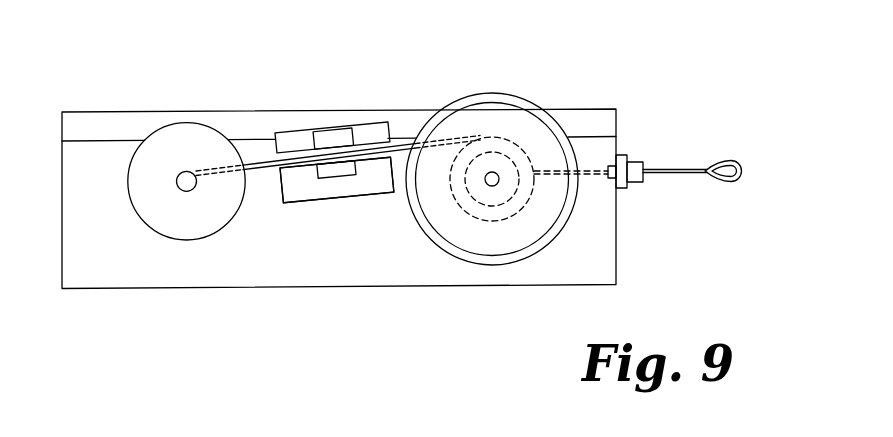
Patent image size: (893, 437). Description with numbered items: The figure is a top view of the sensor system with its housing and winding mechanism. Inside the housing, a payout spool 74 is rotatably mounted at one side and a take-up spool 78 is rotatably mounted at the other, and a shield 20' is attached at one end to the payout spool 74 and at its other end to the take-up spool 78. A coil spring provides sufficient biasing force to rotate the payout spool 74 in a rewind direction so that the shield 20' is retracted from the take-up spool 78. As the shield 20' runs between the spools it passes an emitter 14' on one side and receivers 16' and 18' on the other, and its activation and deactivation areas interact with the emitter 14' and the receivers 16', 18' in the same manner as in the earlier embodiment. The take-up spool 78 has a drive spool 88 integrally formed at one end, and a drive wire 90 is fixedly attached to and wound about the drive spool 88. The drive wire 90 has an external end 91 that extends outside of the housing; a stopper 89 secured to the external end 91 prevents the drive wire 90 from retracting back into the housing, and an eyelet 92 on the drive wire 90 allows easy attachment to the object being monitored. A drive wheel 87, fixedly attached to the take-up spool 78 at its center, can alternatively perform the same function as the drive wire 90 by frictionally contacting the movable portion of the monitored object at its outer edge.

The payout spool 74 is at (180, 239).
The shield 20' is at (338, 92).
The emitter 14' is at (332, 81).
The receiver 16' is at (332, 262).
The receiver 18' is at (337, 262).
The drive wheel 87 is at (467, 97).
The take-up spool 78 is at (478, 217).
The drive spool 88 is at (505, 203).
The stopper 89 is at (633, 182).
The drive wire 90 is at (658, 167).
The external end 91 is at (702, 182).
The eyelet 92 is at (733, 160).